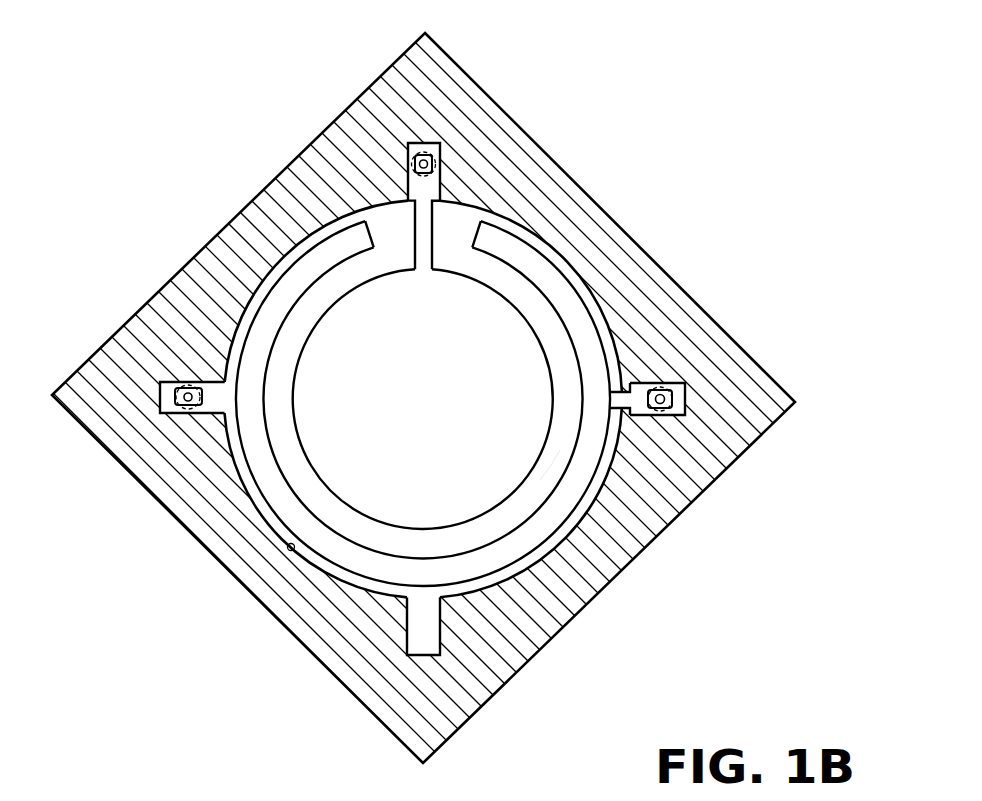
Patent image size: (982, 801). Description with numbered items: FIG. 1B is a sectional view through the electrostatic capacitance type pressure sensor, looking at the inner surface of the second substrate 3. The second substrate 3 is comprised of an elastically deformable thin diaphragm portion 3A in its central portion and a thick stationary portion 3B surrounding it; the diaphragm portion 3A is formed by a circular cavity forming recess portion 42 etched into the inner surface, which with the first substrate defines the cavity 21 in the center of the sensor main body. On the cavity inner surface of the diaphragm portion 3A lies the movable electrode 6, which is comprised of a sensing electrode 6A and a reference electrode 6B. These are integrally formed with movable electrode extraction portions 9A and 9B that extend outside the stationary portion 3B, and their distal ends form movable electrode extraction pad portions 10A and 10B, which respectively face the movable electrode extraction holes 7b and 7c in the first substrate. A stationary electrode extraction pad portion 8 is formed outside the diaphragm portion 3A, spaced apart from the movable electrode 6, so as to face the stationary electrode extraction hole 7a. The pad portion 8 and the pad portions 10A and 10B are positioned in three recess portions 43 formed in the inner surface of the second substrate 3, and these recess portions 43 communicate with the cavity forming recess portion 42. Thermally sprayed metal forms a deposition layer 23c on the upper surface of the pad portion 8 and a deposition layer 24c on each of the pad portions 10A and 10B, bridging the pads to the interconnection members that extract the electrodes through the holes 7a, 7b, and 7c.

The recess portions 43 is at (393, 112).
The movable electrode 6 is at (208, 124).
The sensing electrode 6A is at (265, 305).
The reference electrode 6B is at (345, 315).
The cavity 21 is at (382, 540).
The movable electrode extraction portion 9B is at (432, 223).
The movable electrode extraction pad portion 10B is at (413, 153).
The movable electrode extraction hole 7c is at (436, 167).
The movable electrode extraction portion 9A is at (614, 385).
The movable electrode extraction pad portion 10A is at (686, 398).
The deposition layer 24c is at (672, 392).
The movable electrode extraction hole 7b is at (668, 394).
The stationary electrode extraction pad portion 8 is at (175, 397).
The deposition layer 23c is at (186, 407).
The stationary electrode extraction hole 7a is at (191, 409).
The cavity forming recess portion 42 is at (288, 550).
The diaphragm portion 3A is at (568, 457).
The stationary portion 3B is at (630, 540).
The second substrate 3 is at (712, 548).